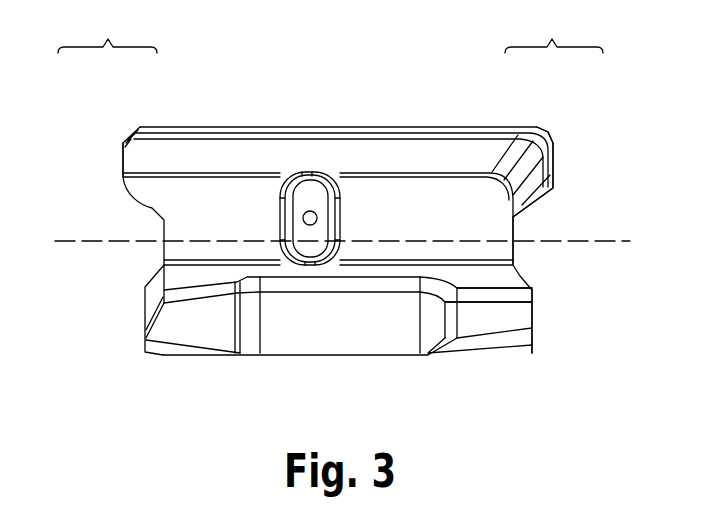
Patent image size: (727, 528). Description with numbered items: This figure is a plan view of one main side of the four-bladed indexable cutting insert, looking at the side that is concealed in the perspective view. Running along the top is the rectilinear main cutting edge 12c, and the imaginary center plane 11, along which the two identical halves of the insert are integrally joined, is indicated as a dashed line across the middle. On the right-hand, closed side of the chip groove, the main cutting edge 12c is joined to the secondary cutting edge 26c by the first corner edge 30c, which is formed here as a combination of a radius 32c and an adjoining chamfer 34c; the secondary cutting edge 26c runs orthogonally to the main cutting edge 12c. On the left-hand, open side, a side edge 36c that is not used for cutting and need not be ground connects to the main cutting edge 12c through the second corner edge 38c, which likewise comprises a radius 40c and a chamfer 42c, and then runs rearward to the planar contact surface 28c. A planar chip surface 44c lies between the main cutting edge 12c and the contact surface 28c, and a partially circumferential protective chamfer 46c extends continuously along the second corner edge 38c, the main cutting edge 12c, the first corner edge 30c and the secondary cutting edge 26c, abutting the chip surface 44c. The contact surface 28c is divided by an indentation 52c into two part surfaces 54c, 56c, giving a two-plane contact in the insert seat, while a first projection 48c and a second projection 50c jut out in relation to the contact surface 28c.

The imaginary center plane 11 is at (603, 242).
The main cutting edge 12c is at (338, 128).
The secondary cutting edge 26c is at (554, 163).
The contact surface 28c is at (397, 200).
The first corner edge 30c is at (554, 101).
The radius 32c is at (530, 127).
The chamfer 34c is at (548, 140).
The side edge 36c is at (124, 143).
The second corner edge 38c is at (107, 77).
The radius 40c is at (137, 128).
The chamfer 42c is at (126, 142).
The chip surface 44c is at (297, 155).
The partially circumferential chamfer 46c is at (182, 143).
The first projection 48c is at (197, 327).
The second projection 50c is at (488, 325).
The indentation 52c is at (313, 244).
The part surface 54c is at (240, 200).
The part surface 56c is at (456, 200).